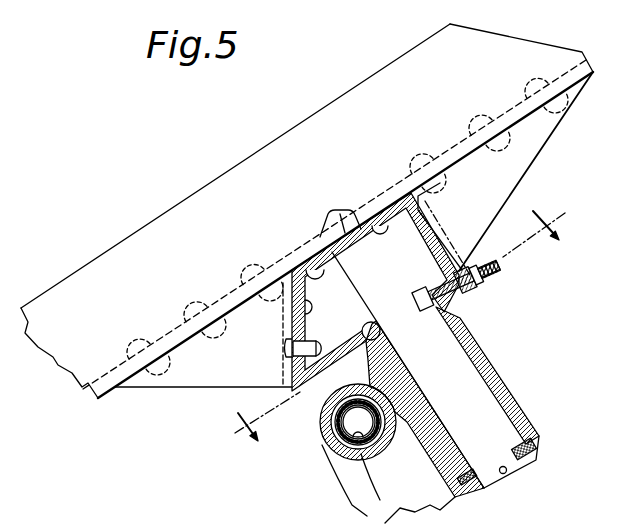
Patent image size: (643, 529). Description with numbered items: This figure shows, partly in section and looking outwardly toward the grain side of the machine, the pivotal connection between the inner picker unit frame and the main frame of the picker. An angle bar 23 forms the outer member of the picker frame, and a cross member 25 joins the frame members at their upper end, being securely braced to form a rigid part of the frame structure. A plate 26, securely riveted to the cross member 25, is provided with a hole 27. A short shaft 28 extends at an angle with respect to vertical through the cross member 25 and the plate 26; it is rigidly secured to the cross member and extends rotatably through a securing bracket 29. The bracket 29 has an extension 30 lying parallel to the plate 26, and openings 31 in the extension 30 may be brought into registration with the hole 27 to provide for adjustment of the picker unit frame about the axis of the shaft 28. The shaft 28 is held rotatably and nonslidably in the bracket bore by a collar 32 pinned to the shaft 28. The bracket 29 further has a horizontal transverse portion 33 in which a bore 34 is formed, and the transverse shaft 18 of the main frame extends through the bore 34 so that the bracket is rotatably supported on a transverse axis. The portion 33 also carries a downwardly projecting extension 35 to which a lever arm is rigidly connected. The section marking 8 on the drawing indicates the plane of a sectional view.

The angle bar 23 is at (293, 131).
The cross member 25 is at (422, 216).
The plate 26 is at (502, 266).
The hole 27 is at (503, 292).
The short shaft 28 is at (450, 375).
The securing bracket 29 is at (505, 395).
The extension 30 is at (470, 307).
The openings 31 is at (490, 307).
The collar 32 is at (532, 448).
The horizontal transverse portion 33 is at (320, 417).
The bore 34 is at (326, 448).
The transverse shaft 18 is at (360, 445).
The downwardly projecting extension 35 is at (367, 518).
The section line 8- 8 is at (398, 314).